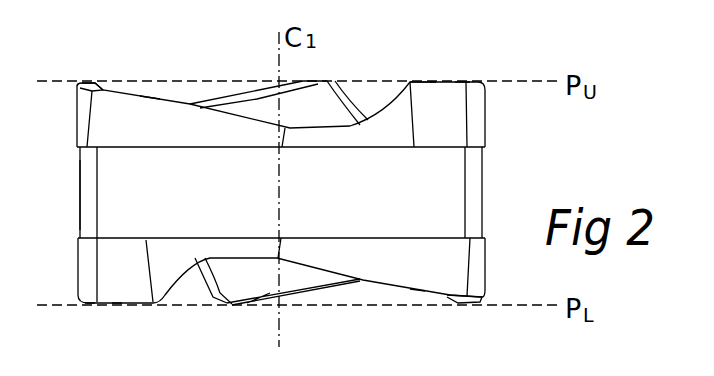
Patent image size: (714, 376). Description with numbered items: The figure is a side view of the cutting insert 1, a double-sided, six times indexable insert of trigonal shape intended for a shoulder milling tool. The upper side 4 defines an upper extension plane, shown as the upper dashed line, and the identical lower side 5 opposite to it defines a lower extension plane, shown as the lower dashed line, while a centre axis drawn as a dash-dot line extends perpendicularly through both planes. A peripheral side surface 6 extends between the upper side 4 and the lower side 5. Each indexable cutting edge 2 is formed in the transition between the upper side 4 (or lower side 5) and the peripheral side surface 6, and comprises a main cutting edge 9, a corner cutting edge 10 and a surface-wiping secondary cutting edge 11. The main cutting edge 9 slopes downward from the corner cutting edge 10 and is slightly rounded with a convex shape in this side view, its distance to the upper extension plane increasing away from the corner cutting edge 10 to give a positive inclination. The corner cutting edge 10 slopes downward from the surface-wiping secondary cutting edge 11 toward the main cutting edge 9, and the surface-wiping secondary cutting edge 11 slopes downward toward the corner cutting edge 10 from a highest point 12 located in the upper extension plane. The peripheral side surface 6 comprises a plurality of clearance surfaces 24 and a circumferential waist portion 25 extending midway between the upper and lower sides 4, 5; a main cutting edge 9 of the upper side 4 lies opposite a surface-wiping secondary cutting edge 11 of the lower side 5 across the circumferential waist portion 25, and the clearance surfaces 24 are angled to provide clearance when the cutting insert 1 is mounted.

The cutting insert 1 is at (524, 61).
The indexable cutting edge 2 is at (152, 97).
The upper side 4 is at (333, 113).
The lower side 5 is at (287, 278).
The peripheral side surface 6 is at (352, 206).
The main cutting edge 9 is at (131, 96).
The corner cutting edge 10 is at (78, 98).
The surface-wiping secondary cutting edge 11 is at (80, 81).
The highest point 12 is at (418, 80).
The clearance surface 24 is at (120, 135).
The circumferential waist portion 25 is at (155, 188).